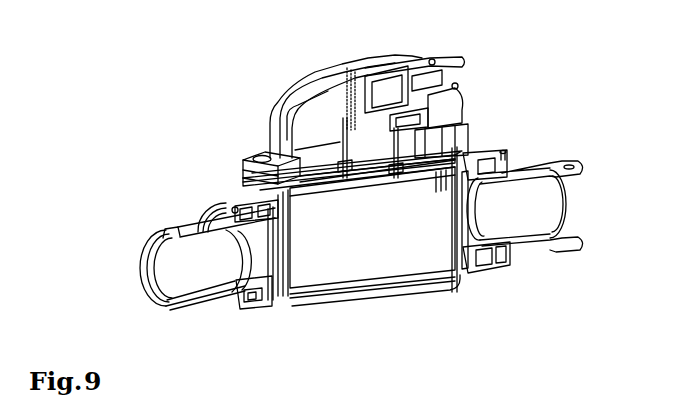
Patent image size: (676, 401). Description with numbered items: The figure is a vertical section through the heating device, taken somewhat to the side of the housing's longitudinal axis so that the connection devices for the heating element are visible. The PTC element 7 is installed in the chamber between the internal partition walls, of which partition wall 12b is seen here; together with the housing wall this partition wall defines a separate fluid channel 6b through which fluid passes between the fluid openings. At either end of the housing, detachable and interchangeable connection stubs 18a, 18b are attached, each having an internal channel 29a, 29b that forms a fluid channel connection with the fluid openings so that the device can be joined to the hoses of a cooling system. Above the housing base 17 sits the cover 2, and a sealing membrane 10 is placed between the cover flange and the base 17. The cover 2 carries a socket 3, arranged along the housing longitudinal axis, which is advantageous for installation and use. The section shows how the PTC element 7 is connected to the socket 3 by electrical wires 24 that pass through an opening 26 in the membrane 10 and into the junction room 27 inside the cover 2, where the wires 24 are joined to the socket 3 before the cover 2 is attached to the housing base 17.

The cover 2 is at (352, 59).
The socket 3 is at (462, 62).
The electrical wires 24 is at (392, 133).
The base 17 is at (255, 150).
The sealing membrane 10 is at (238, 163).
The junction room 27 is at (317, 137).
The opening 26 is at (348, 173).
The PTC element 7 is at (373, 219).
The partition wall 12b is at (282, 257).
The fluid channel 6b is at (265, 245).
The internal channel 29b is at (207, 257).
The connection stub 18b is at (209, 298).
The internal channel 29a is at (522, 209).
The connection stub 18a is at (523, 241).